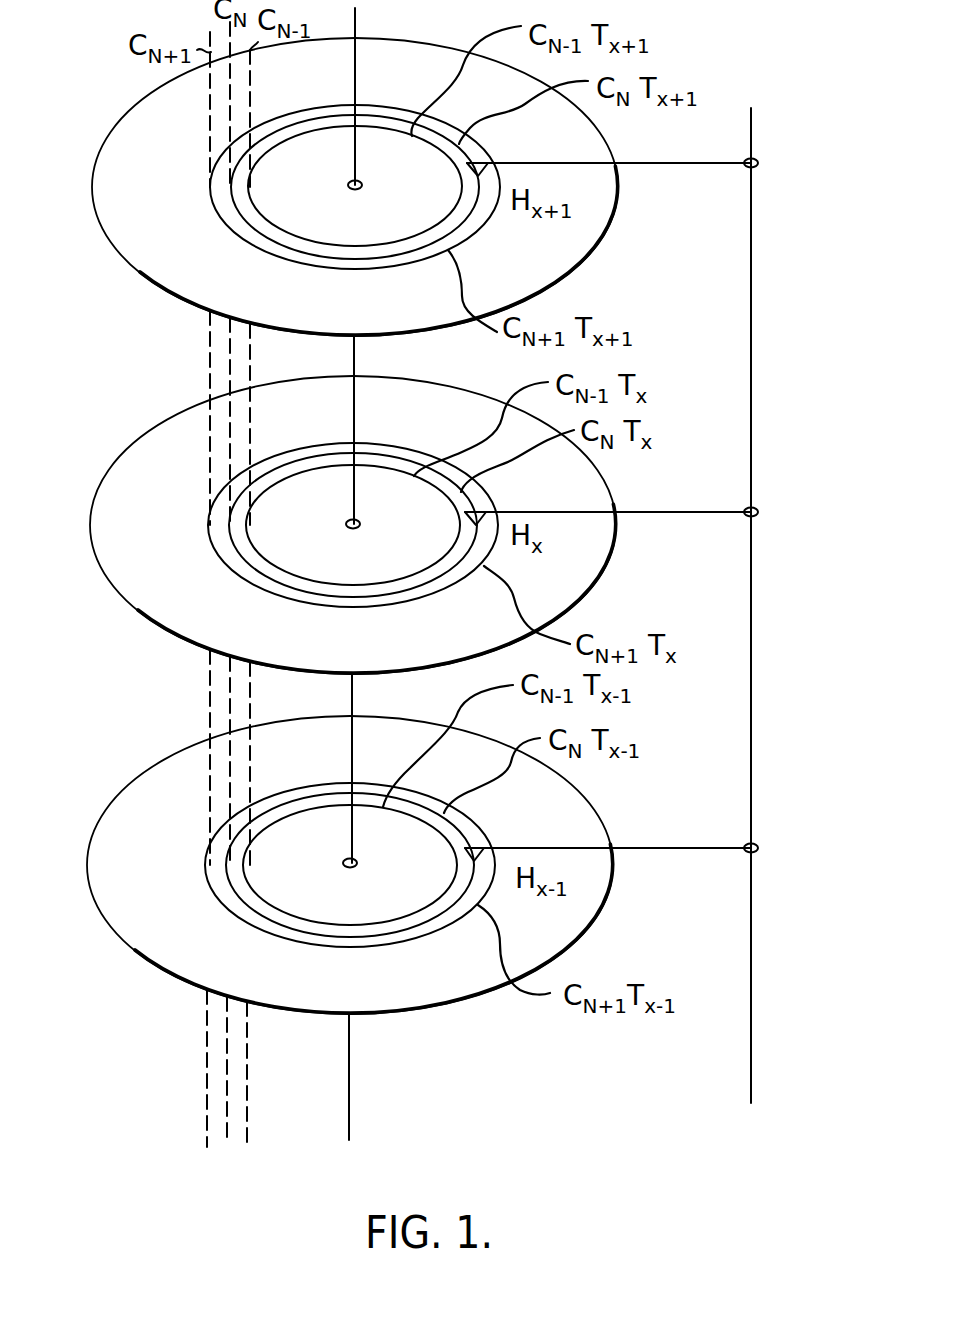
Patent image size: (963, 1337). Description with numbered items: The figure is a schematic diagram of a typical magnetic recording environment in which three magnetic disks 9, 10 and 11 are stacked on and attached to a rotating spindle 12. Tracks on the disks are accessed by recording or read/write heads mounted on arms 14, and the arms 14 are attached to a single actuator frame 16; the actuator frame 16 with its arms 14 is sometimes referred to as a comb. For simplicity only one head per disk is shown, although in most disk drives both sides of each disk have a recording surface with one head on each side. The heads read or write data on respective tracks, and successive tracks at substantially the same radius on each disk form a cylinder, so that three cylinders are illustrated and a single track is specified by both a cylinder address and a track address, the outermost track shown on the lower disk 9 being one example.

The magnetic disk 9 is at (133, 913).
The magnetic disk 10 is at (137, 572).
The magnetic disk 11 is at (133, 220).
The rotating spindle 12 is at (351, 699).
The arm 14 is at (693, 163).
The actuator frame 16 is at (757, 719).